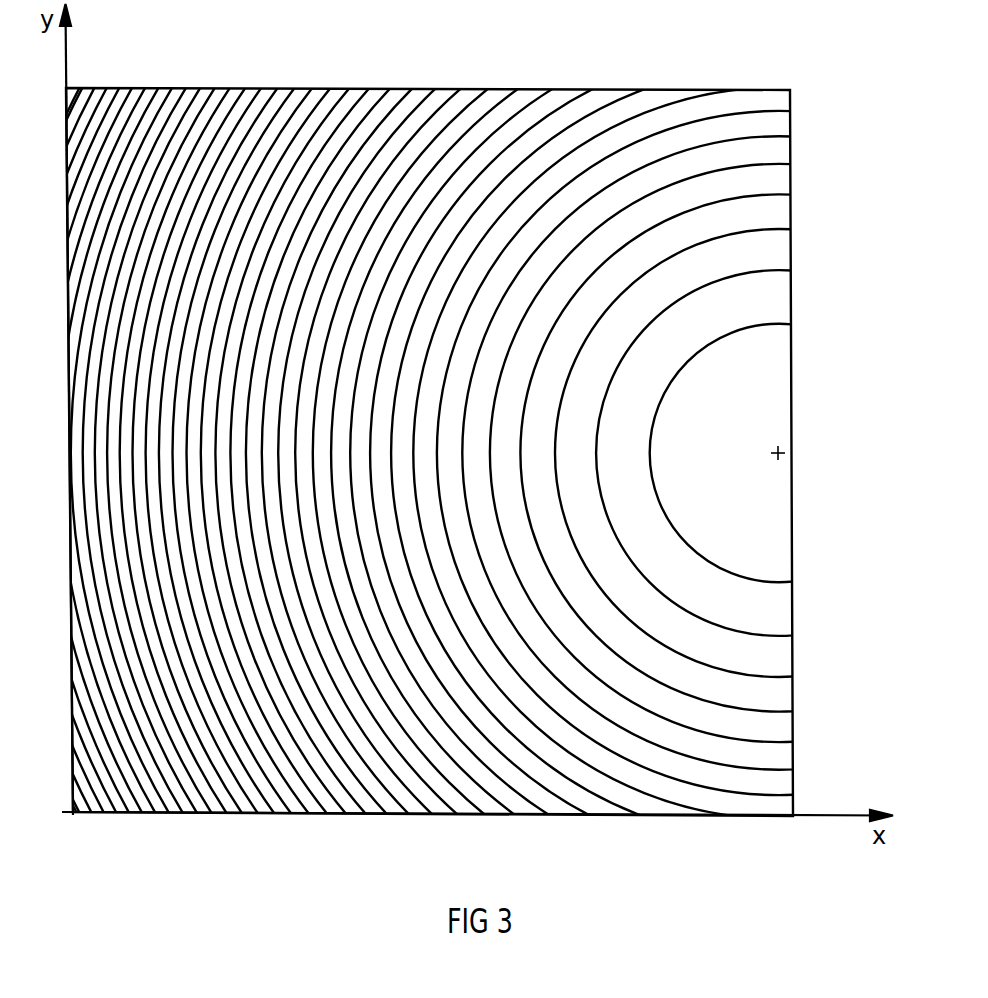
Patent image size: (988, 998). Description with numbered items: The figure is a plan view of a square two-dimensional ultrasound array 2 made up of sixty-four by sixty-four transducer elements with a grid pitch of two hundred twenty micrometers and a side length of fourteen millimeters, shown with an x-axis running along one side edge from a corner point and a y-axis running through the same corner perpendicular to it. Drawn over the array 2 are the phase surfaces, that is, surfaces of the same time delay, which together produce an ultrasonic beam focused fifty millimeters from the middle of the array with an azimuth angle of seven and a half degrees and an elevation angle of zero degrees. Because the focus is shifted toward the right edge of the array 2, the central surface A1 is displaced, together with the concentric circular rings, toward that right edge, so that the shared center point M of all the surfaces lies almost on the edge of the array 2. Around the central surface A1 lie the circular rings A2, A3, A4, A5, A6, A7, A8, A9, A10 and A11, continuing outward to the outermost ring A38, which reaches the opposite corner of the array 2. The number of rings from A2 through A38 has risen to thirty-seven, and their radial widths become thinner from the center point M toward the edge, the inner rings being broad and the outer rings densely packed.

The two-dimensional array 2 is at (463, 88).
The central surface A1 is at (762, 512).
The circular ring A2 is at (770, 604).
The circular ring A3 is at (770, 650).
The circular ring A4 is at (770, 688).
The circular ring A5 is at (772, 727).
The circular ring A6 is at (777, 760).
The circular ring A7 is at (762, 783).
The circular ring A8 is at (740, 802).
The circular ring A9 is at (644, 804).
The circular ring A10 is at (588, 803).
The circular ring A11 is at (542, 795).
The circular ring A38 is at (75, 816).
The center point M is at (797, 437).